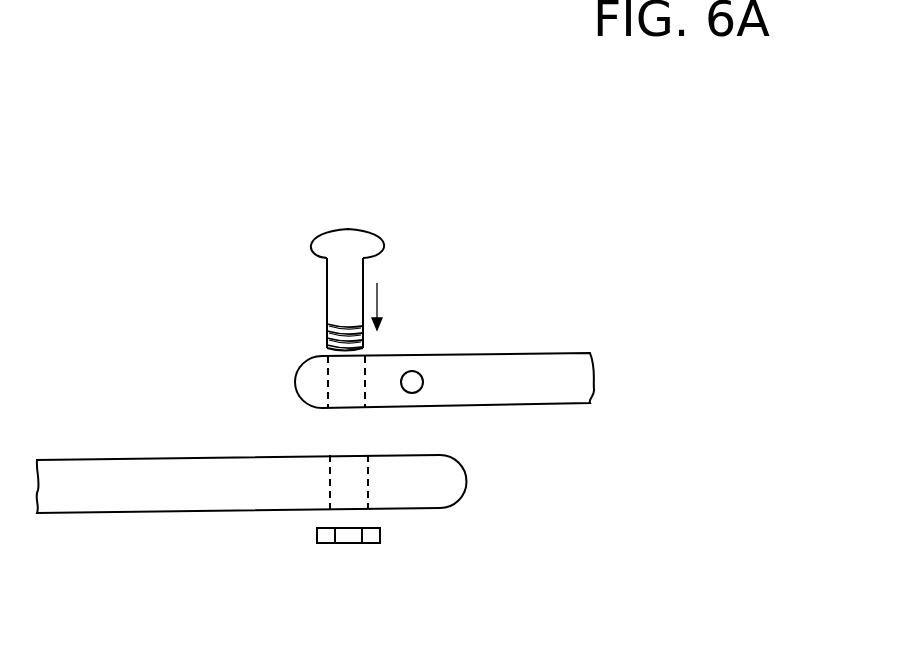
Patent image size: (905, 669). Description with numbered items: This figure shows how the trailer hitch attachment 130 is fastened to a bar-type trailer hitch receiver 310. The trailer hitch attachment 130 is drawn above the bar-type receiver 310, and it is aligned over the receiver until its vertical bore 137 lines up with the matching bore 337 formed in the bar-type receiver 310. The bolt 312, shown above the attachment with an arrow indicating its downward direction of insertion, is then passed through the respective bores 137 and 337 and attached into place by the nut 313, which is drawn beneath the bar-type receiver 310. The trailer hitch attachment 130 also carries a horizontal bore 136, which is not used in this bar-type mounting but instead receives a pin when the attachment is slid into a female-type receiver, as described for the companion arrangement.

The trailer hitch attachment 130 is at (560, 335).
The horizontal bore 136 is at (421, 372).
The vertical bore 137 is at (340, 387).
The bar-type trailer hitch receiver 310 is at (468, 481).
The bolt 312 is at (357, 230).
The nut 313 is at (317, 540).
The matching bore 337 is at (358, 488).